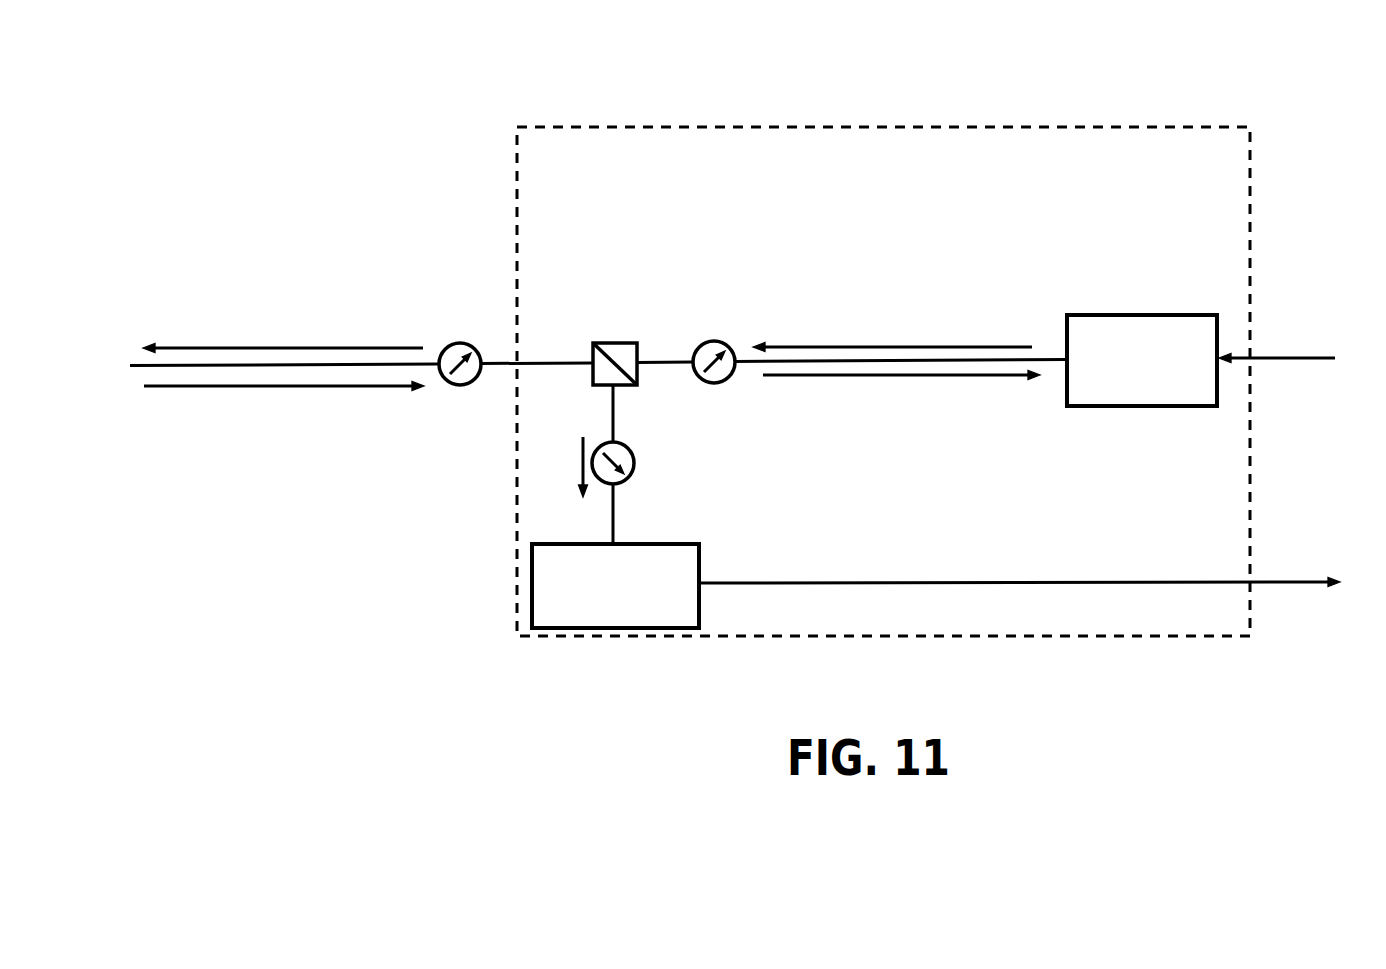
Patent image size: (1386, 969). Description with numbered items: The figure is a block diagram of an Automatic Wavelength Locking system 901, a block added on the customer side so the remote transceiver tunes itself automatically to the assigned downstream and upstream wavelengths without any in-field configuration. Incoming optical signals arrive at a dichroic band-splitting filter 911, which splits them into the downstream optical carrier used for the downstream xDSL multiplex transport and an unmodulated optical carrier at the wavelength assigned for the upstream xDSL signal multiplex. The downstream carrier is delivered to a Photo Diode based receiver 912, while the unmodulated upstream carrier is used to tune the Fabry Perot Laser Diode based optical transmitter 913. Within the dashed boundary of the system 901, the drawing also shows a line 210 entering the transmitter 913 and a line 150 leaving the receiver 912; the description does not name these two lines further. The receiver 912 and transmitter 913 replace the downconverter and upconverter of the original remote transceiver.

The Automatic Wavelength Locking system 901 is at (598, 114).
The dichroic band-splitting filter 911 is at (645, 384).
The receiver 912 is at (707, 550).
The optical transmitter 913 is at (1130, 415).
The input signal line 210 is at (1287, 348).
The output signal line 150 is at (1285, 594).